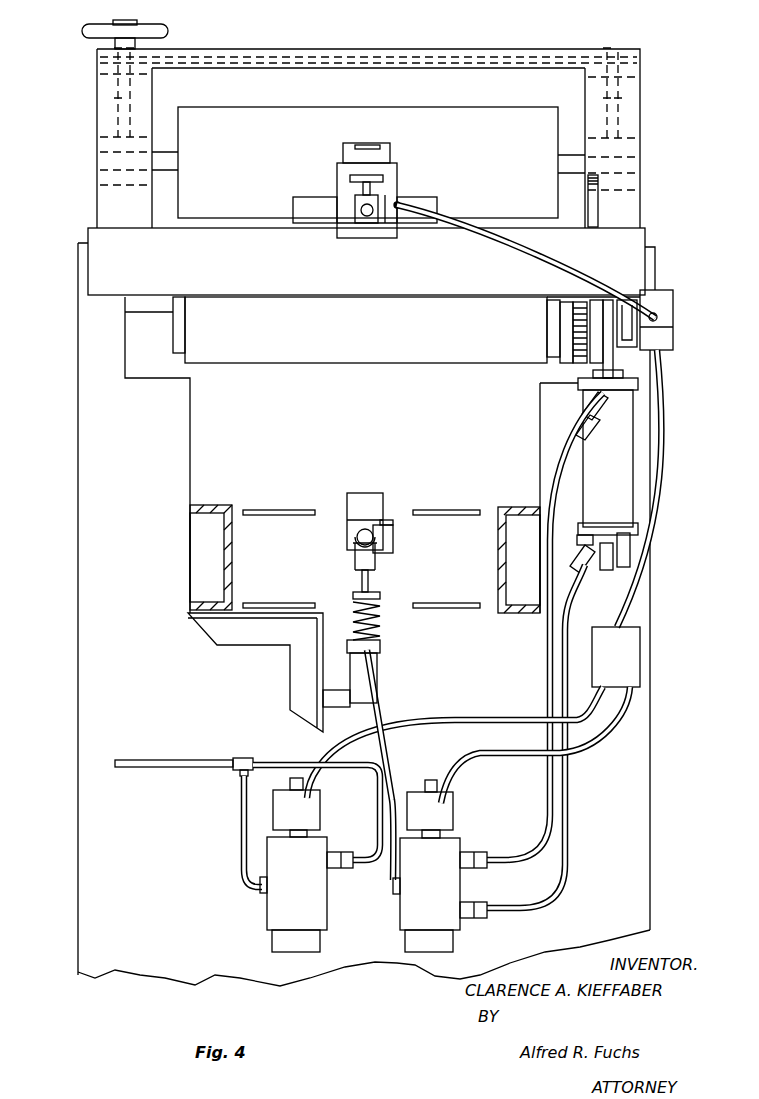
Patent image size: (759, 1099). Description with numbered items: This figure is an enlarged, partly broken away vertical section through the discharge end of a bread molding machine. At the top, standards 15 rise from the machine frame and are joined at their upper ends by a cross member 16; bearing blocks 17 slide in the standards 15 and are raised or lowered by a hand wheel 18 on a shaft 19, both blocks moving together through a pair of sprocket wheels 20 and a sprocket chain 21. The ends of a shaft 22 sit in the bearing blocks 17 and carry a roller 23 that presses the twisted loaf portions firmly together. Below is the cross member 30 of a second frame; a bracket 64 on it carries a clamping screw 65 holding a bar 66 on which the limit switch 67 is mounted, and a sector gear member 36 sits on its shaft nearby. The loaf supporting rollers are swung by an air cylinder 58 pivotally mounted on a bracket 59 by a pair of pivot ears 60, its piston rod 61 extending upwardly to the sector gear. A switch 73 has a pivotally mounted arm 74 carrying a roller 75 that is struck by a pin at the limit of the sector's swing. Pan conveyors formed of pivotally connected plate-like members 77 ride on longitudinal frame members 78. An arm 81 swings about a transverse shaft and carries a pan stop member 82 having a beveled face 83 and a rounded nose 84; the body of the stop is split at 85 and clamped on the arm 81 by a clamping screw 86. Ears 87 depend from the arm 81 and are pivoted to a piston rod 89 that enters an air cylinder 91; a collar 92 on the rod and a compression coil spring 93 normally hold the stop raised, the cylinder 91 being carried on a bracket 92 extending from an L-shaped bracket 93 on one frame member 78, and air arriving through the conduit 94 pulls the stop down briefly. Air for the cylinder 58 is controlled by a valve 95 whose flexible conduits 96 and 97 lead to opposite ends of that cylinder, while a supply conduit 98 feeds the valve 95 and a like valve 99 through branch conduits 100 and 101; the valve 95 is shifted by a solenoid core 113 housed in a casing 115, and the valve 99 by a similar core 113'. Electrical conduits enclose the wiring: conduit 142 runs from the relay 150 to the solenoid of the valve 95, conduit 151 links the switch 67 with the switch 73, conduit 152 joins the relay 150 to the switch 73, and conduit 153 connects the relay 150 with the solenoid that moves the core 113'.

The standards 15 is at (100, 127).
The cross member 16 is at (440, 56).
The bearing blocks 17 is at (100, 180).
The hand wheel 18 is at (82, 33).
The shaft 19 is at (118, 45).
The sprocket wheels 20 is at (100, 60).
The sprocket chain 21 is at (528, 62).
The shaft 22 is at (162, 157).
The roller 23 is at (447, 118).
The cross member 30 is at (632, 243).
The sector gear member 36 is at (597, 210).
The air cylinder 58 is at (625, 428).
The bracket 59 is at (605, 575).
The pivot ears 60 is at (582, 545).
The piston rod 61 is at (612, 358).
The bracket 64 is at (398, 207).
The clamping screw 65 is at (380, 178).
The bar 66 is at (364, 210).
The limit switch 67 is at (350, 155).
The switch 73 is at (670, 342).
The arm 74 is at (650, 330).
The roller 75 is at (590, 290).
The plate-like members 77 is at (258, 510).
The frame members 78 is at (515, 508).
The arm 81 is at (372, 530).
The pan stop member 82 is at (350, 530).
The beveled face 83 is at (360, 504).
The nose 84 is at (364, 495).
The split 85 is at (385, 540).
The clamping screw 86 is at (390, 522).
The ears 87 is at (353, 557).
The piston rod 89 is at (370, 585).
The air cylinder 91 is at (377, 665).
The collar 92 is at (382, 595).
The compression coil spring 93 is at (380, 620).
The conduit 94 is at (390, 720).
The valve 95 is at (410, 920).
The flexible conduit 96 is at (548, 805).
The flexible conduit 97 is at (568, 790).
The conduit 98 is at (178, 765).
The valve 99 is at (275, 922).
The branch conduit 100 is at (260, 760).
The branch conduit 101 is at (240, 825).
The core 113 is at (439, 762).
The core 113' is at (293, 761).
The casing 115 is at (312, 815).
The conduit 142 is at (610, 730).
The relay 150 is at (633, 652).
The conduit 151 is at (505, 240).
The conduit 152 is at (665, 465).
The conduit 153 is at (485, 720).